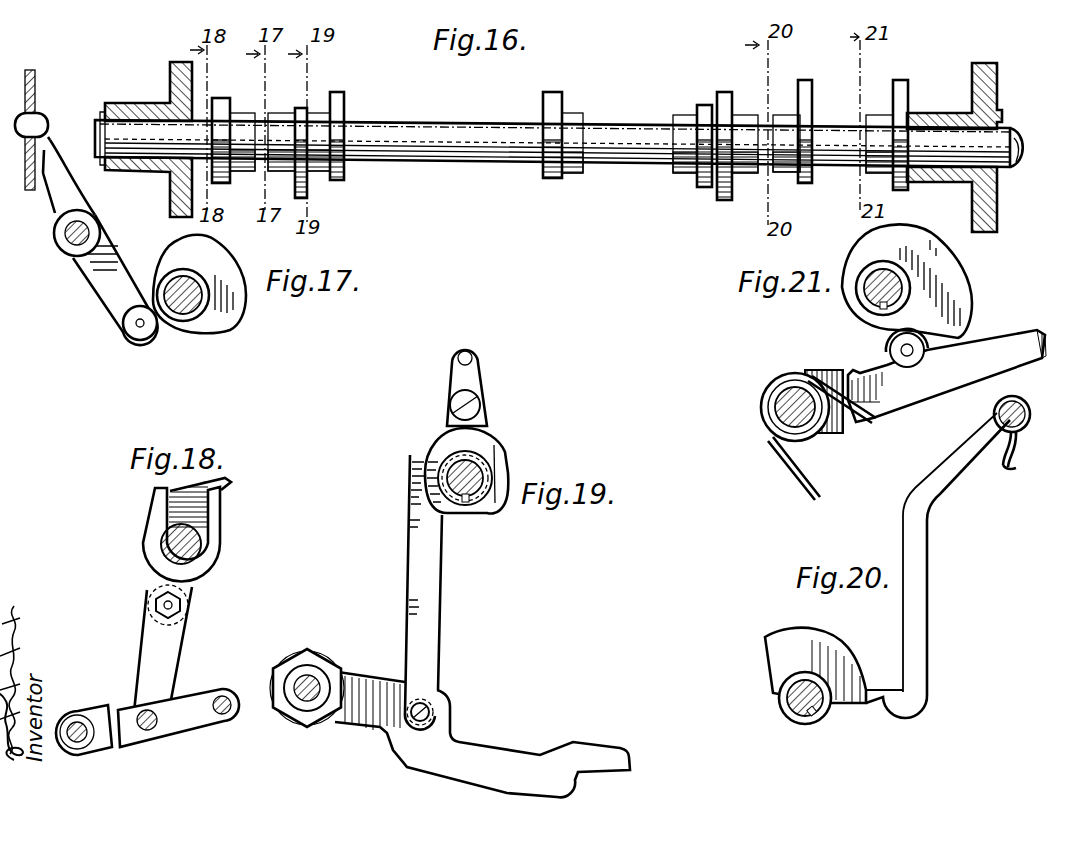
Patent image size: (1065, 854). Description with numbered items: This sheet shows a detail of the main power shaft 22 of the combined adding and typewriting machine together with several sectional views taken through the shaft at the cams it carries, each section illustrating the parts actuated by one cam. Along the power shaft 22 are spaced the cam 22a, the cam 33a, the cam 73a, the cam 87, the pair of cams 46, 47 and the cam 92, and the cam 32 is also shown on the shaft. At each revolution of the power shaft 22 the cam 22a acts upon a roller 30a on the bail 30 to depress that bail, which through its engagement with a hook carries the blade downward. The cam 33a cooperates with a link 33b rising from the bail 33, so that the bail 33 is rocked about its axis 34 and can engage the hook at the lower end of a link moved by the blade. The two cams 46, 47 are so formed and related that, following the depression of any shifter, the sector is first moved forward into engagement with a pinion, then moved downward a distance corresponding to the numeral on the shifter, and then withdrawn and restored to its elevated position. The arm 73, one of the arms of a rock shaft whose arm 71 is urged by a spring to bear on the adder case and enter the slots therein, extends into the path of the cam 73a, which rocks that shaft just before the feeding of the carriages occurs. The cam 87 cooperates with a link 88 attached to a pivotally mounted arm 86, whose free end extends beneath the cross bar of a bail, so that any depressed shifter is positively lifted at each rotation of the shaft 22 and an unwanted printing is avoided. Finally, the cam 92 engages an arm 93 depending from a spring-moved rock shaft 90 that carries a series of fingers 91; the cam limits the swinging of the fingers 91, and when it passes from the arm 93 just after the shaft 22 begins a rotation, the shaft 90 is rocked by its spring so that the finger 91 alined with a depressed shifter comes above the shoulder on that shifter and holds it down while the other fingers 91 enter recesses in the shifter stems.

In FIG. 16, the power shaft 22 is at (452, 124).
In FIG. 17, the power shaft 22 is at (196, 319).
In FIG. 18, the power shaft 22 is at (195, 543).
In FIG. 19, the power shaft 22 is at (465, 481).
In FIG. 20, the power shaft 22 is at (785, 710).
In FIG. 21, the cam 22a is at (962, 287).
In FIG. 21, the bail 30 is at (936, 398).
In FIG. 21, the roller 30a is at (890, 353).
In FIG. 16, the link 32 is at (903, 82).
In FIG. 18, the bail 33 is at (190, 720).
In FIG. 16, the cam 33a is at (233, 125).
In FIG. 18, the cam 33a is at (227, 492).
In FIG. 18, the link 33b is at (172, 646).
In FIG. 18, the axis 34 is at (78, 748).
In FIG. 16, the cam 46 is at (698, 111).
In FIG. 16, the cam 47 is at (726, 99).
In FIG. 17, the arm 71 is at (68, 191).
In FIG. 17, the arm 73 is at (102, 282).
In FIG. 16, the cam 73a is at (309, 189).
In FIG. 17, the cam 73a is at (187, 243).
In FIG. 19, the arm 86 is at (506, 752).
In FIG. 16, the cam 87 is at (346, 105).
In FIG. 19, the cam 87 is at (484, 432).
In FIG. 19, the link 88 is at (428, 570).
In FIG. 21, the rock shaft 90 is at (996, 411).
In FIG. 21, the finger 91 is at (1004, 470).
In FIG. 16, the cam 92 is at (808, 91).
In FIG. 20, the cam 92 is at (812, 630).
In FIG. 20, the arm 93 is at (903, 517).